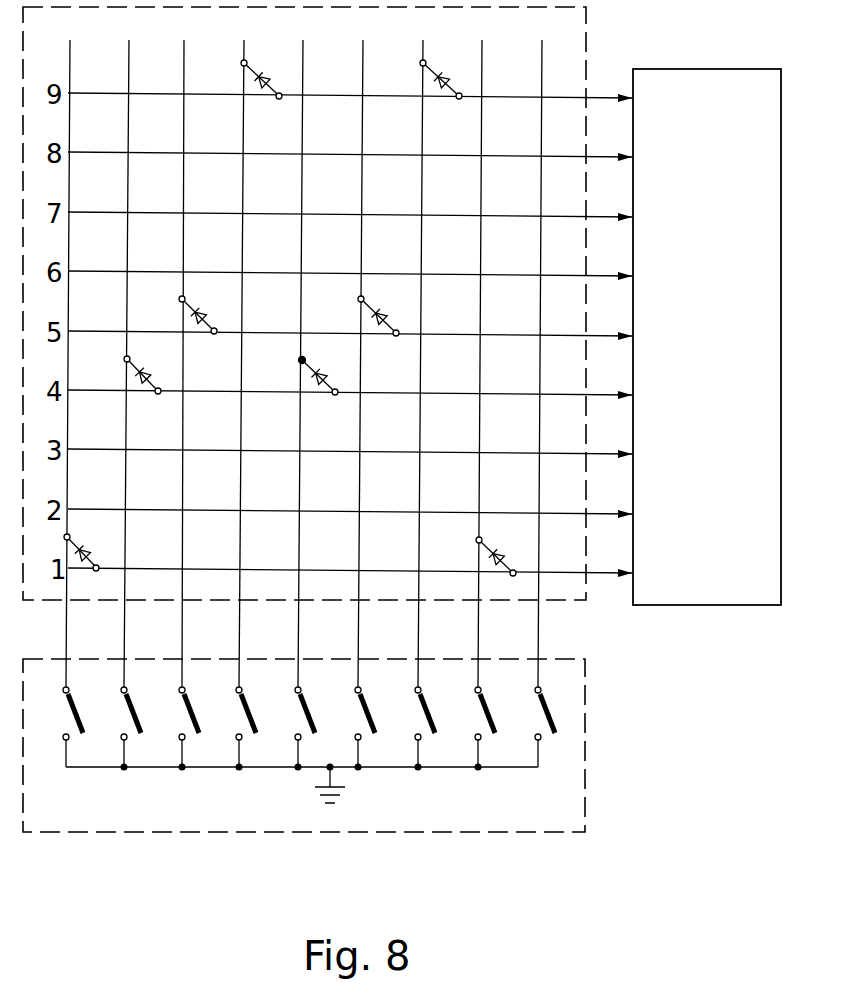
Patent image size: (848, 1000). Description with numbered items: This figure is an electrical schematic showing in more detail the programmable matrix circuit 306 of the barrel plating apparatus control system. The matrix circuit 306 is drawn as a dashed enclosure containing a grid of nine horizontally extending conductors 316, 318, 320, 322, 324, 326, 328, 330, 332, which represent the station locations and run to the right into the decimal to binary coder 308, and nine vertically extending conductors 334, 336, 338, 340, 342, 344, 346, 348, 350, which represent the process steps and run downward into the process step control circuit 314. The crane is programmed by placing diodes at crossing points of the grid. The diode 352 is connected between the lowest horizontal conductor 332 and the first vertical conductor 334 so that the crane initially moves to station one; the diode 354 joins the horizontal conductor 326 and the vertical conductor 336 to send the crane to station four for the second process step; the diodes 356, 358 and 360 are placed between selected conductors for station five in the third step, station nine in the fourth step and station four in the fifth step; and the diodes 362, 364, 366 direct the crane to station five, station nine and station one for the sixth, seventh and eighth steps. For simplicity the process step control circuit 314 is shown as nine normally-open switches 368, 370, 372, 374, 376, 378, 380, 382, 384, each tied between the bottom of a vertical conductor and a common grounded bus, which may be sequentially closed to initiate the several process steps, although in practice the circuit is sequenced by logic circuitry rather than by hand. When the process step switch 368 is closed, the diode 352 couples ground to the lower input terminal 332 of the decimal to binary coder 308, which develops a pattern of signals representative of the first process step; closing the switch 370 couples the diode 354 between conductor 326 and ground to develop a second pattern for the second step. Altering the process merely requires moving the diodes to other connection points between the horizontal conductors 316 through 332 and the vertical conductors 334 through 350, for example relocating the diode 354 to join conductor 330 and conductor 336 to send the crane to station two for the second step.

The programmable matrix circuit 306 is at (575, 614).
The decimal to binary coder 308 is at (707, 337).
The process step control circuit 314 is at (385, 840).
The horizontally extending conductor 316 is at (604, 96).
The horizontally extending conductor 318 is at (604, 155).
The horizontally extending conductor 320 is at (604, 215).
The horizontally extending conductor 322 is at (604, 274).
The horizontally extending conductor 324 is at (604, 334).
The horizontally extending conductor 326 is at (604, 393).
The horizontally extending conductor 328 is at (604, 452).
The horizontally extending conductor 330 is at (604, 512).
The horizontally extending conductor 332 is at (604, 571).
The vertically extending conductor 334 is at (81, 26).
The vertically extending conductor 336 is at (129, 53).
The vertically extending conductor 338 is at (184, 53).
The vertically extending conductor 340 is at (244, 53).
The vertically extending conductor 342 is at (303, 53).
The vertically extending conductor 344 is at (363, 53).
The vertically extending conductor 346 is at (423, 53).
The vertically extending conductor 348 is at (482, 53).
The vertically extending conductor 350 is at (542, 53).
The diode 352 is at (112, 529).
The diode 354 is at (174, 351).
The diode 356 is at (232, 292).
The diode 358 is at (260, 100).
The diode 360 is at (350, 352).
The diode 362 is at (410, 292).
The diode 364 is at (440, 100).
The diode 366 is at (527, 532).
The process step switch 368 is at (74, 712).
The switch 370 is at (126, 714).
The switch 372 is at (180, 700).
The switch 374 is at (236, 700).
The switch 376 is at (295, 700).
The switch 378 is at (356, 700).
The switch 380 is at (416, 700).
The switch 382 is at (476, 700).
The switch 384 is at (536, 700).